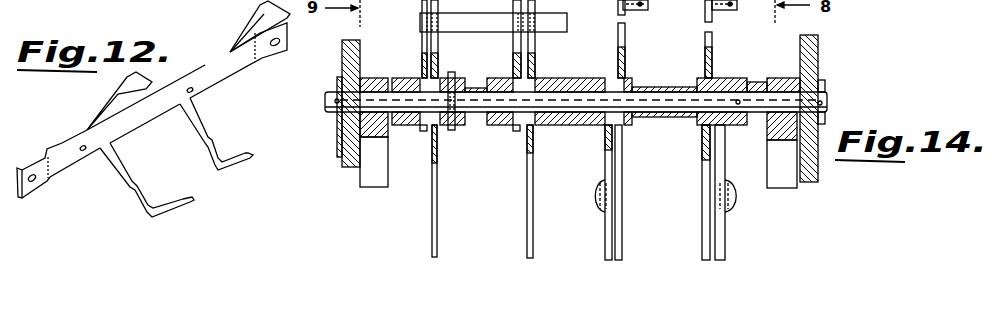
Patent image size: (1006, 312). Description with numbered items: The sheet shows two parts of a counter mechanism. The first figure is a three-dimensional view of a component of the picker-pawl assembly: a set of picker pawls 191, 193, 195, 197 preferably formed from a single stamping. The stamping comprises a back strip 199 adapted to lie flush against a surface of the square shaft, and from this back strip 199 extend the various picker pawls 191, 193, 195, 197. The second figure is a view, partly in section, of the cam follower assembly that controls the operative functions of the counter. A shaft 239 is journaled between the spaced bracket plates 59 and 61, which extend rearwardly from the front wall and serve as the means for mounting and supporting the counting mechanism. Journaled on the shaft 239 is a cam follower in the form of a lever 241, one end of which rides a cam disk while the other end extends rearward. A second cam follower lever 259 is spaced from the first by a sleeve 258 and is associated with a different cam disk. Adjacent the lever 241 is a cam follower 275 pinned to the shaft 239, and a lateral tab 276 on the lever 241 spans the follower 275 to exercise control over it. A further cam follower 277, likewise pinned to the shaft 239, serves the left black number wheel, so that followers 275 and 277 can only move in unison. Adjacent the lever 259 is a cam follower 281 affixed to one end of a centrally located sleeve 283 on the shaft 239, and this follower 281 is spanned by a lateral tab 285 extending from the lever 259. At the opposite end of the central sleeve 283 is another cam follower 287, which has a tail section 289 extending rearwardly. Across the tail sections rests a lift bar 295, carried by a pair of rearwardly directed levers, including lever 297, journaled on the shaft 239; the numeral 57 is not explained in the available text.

In FIG. 12, the picker pawl 191 is at (98, 102).
In FIG. 12, the picker pawl 193 is at (150, 197).
In FIG. 12, the picker pawl 195 is at (270, 122).
In FIG. 12, the picker pawl 197 is at (249, 21).
In FIG. 12, the back strip 199 is at (125, 125).
In FIG. 14, the pivot pin 57 is at (374, 24).
In FIG. 14, the bracket plate 59 is at (360, 46).
In FIG. 14, the bracket plate 61 is at (818, 60).
In FIG. 14, the shaft 239 is at (643, 100).
In FIG. 14, the cam follower lever 241 is at (707, 155).
In FIG. 14, the sleeve 258 is at (675, 118).
In FIG. 14, the cam follower lever 259 is at (622, 157).
In FIG. 14, the cam follower 275 is at (725, 223).
In FIG. 14, the lateral tab 276 is at (723, 192).
In FIG. 14, the cam follower 277 is at (437, 210).
In FIG. 14, the cam follower 281 is at (605, 142).
In FIG. 14, the central sleeve 283 is at (590, 80).
In FIG. 14, the lateral tab 285 is at (600, 198).
In FIG. 14, the cam follower 287 is at (533, 196).
In FIG. 14, the tail section 289 is at (537, 42).
In FIG. 14, the lift bar 295 is at (475, 25).
In FIG. 14, the lever 297 is at (381, 3).